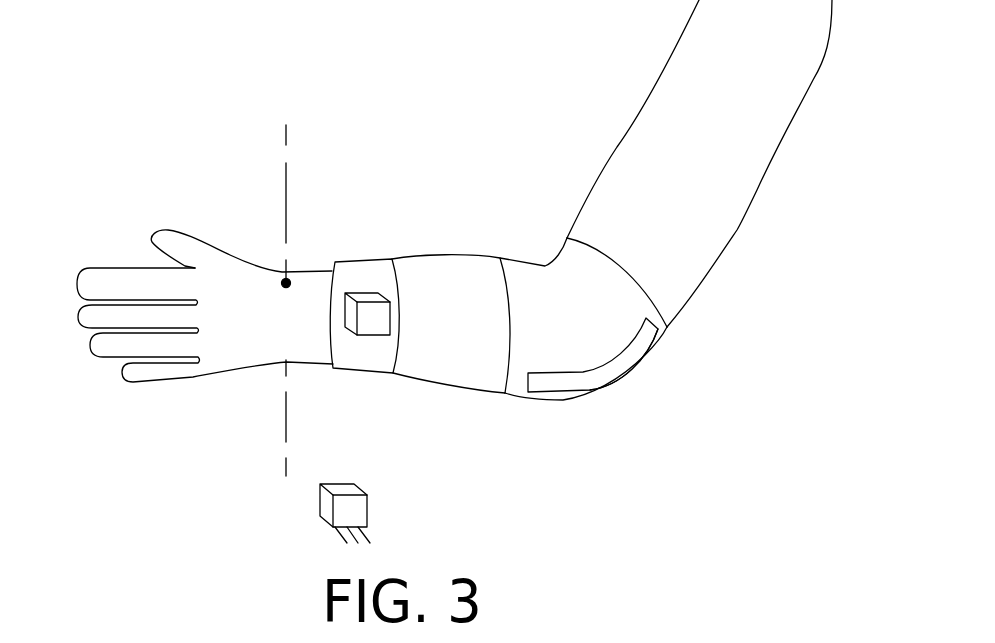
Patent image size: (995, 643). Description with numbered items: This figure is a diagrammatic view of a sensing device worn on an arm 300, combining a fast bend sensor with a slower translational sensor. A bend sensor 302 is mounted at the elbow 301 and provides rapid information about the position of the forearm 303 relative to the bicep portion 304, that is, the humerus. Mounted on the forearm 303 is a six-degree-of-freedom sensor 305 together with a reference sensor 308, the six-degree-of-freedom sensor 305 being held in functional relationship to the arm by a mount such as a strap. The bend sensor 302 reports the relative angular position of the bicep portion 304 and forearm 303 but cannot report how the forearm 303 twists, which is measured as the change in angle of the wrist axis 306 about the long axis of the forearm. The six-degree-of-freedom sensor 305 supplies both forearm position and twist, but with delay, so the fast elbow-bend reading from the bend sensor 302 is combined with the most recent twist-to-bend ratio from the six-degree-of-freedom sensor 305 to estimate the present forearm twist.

The arm 300 is at (717, 277).
The elbow 301 is at (625, 388).
The bend sensor 302 is at (577, 382).
The forearm 303 is at (455, 270).
The bicep portion 304 is at (620, 180).
The 6-DOF-E 305 is at (375, 325).
The wrist axis 306 is at (288, 222).
The reference sensor 308 is at (357, 512).